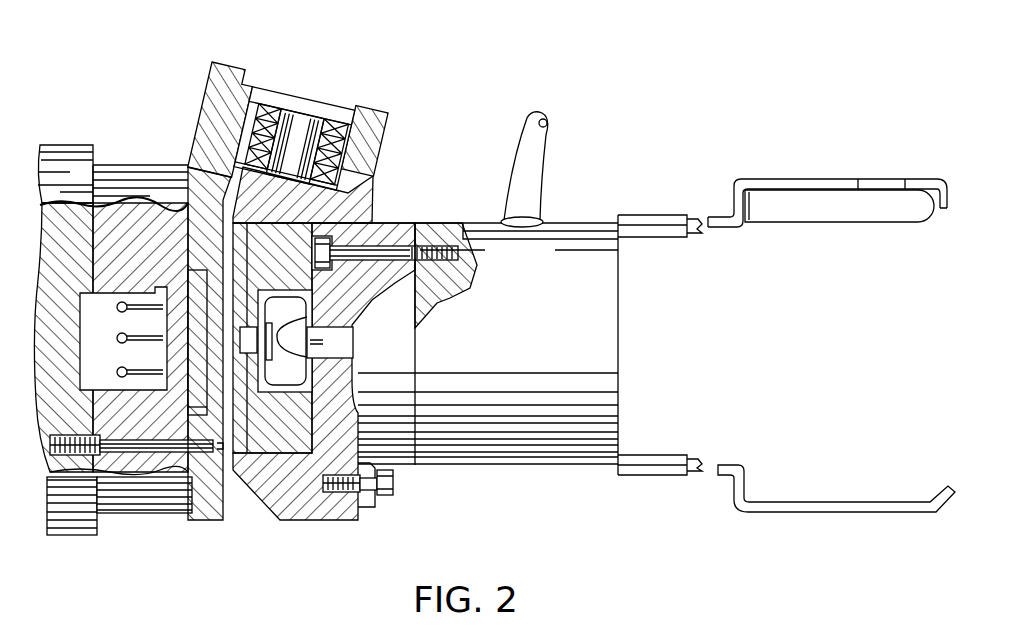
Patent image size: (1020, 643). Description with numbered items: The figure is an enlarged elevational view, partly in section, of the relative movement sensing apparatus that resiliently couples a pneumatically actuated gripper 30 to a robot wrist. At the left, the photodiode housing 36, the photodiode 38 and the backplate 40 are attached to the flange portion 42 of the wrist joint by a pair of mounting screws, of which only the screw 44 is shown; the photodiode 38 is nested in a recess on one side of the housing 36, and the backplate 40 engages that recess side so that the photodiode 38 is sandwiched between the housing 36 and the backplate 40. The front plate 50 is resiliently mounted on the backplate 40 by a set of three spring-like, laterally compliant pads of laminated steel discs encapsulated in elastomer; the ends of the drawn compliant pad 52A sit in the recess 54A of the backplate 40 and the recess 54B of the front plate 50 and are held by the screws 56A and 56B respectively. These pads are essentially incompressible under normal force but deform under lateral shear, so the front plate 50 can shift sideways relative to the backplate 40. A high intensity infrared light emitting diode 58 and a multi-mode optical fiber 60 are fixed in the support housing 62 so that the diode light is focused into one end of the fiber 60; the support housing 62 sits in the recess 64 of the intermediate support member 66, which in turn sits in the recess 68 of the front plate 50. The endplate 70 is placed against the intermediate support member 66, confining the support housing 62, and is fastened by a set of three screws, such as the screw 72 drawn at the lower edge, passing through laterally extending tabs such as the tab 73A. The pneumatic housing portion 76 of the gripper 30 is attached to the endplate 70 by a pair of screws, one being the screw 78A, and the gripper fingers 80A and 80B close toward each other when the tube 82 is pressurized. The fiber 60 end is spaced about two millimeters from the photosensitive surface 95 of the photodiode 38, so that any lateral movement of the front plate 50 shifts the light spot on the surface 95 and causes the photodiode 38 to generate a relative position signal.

The pneumatically actuated gripper 30 is at (652, 196).
The photodiode housing 36 is at (145, 165).
The photodiode 38 is at (182, 472).
The backplate 40 is at (225, 65).
The flange portion 42 is at (73, 150).
The mounting screw 44 is at (116, 512).
The front plate 50 is at (365, 110).
The compliant pad 52A is at (266, 110).
The recess 54A is at (250, 92).
The recess 54B is at (331, 118).
The screw 56A is at (196, 118).
The screw 56B is at (378, 163).
The light emitting diode 58 is at (335, 330).
The optical fiber 60 is at (287, 298).
The support housing 62 is at (328, 298).
The recess 64 is at (316, 255).
The intermediate support member 66 is at (284, 224).
The recess 68 is at (258, 215).
The endplate 70 is at (400, 225).
The fastening screw 72 is at (385, 492).
The tab 73A is at (368, 507).
The pneumatic housing portion 76 is at (488, 225).
The screw 78A is at (357, 250).
The finger 80A is at (838, 182).
The finger 80B is at (806, 510).
The tube 82 is at (538, 137).
The photosensitive surface 95 is at (227, 380).